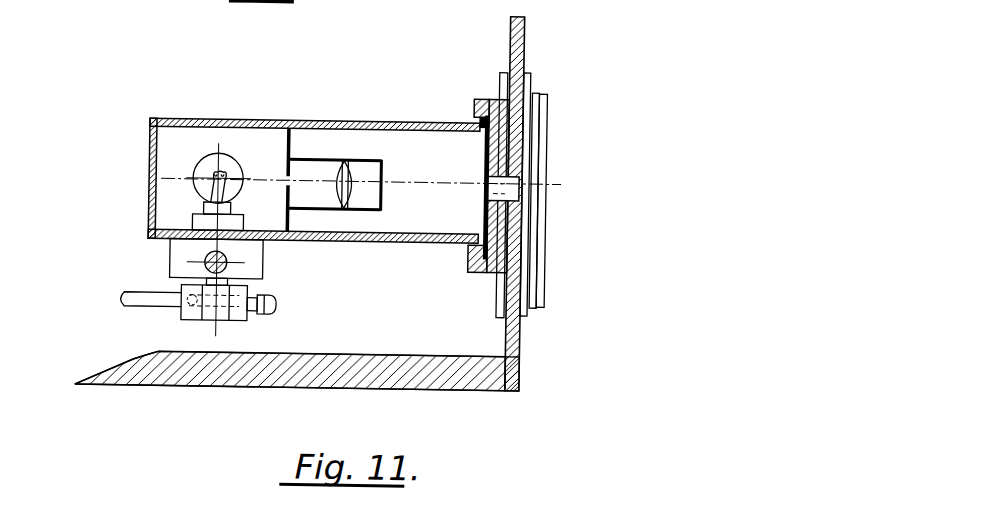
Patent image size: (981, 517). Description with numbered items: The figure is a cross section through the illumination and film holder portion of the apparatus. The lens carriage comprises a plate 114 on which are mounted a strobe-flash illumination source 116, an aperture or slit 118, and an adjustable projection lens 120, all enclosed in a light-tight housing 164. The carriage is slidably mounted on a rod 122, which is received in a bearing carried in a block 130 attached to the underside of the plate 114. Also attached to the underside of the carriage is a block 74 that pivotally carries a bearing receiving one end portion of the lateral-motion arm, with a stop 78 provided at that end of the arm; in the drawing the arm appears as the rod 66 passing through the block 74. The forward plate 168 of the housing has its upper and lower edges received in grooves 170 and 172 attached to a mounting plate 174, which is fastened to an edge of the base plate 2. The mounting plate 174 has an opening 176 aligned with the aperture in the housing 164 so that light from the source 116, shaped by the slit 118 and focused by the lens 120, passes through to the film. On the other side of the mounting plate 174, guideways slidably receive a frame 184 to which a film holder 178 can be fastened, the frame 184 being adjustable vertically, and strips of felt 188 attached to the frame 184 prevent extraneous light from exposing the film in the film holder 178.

The base plate 2 is at (135, 386).
The adjusting rod 66 is at (136, 308).
The block 74 is at (186, 314).
The stop 78 is at (273, 311).
The plate 114 is at (313, 195).
The strobe-flash illumination source 116 is at (192, 167).
The slit 118 is at (286, 181).
The lens 120 is at (342, 175).
The rod 122 is at (228, 268).
The block 130 is at (170, 258).
The light-tight housing 164 is at (243, 122).
The forward plate 168 is at (476, 95).
The groove 170 is at (470, 113).
The groove 172 is at (475, 266).
The mounting plate 174 is at (520, 342).
The opening 176 is at (481, 178).
The film holder 178 is at (546, 180).
The frame 184 is at (529, 72).
The strips of felt 188 is at (522, 67).